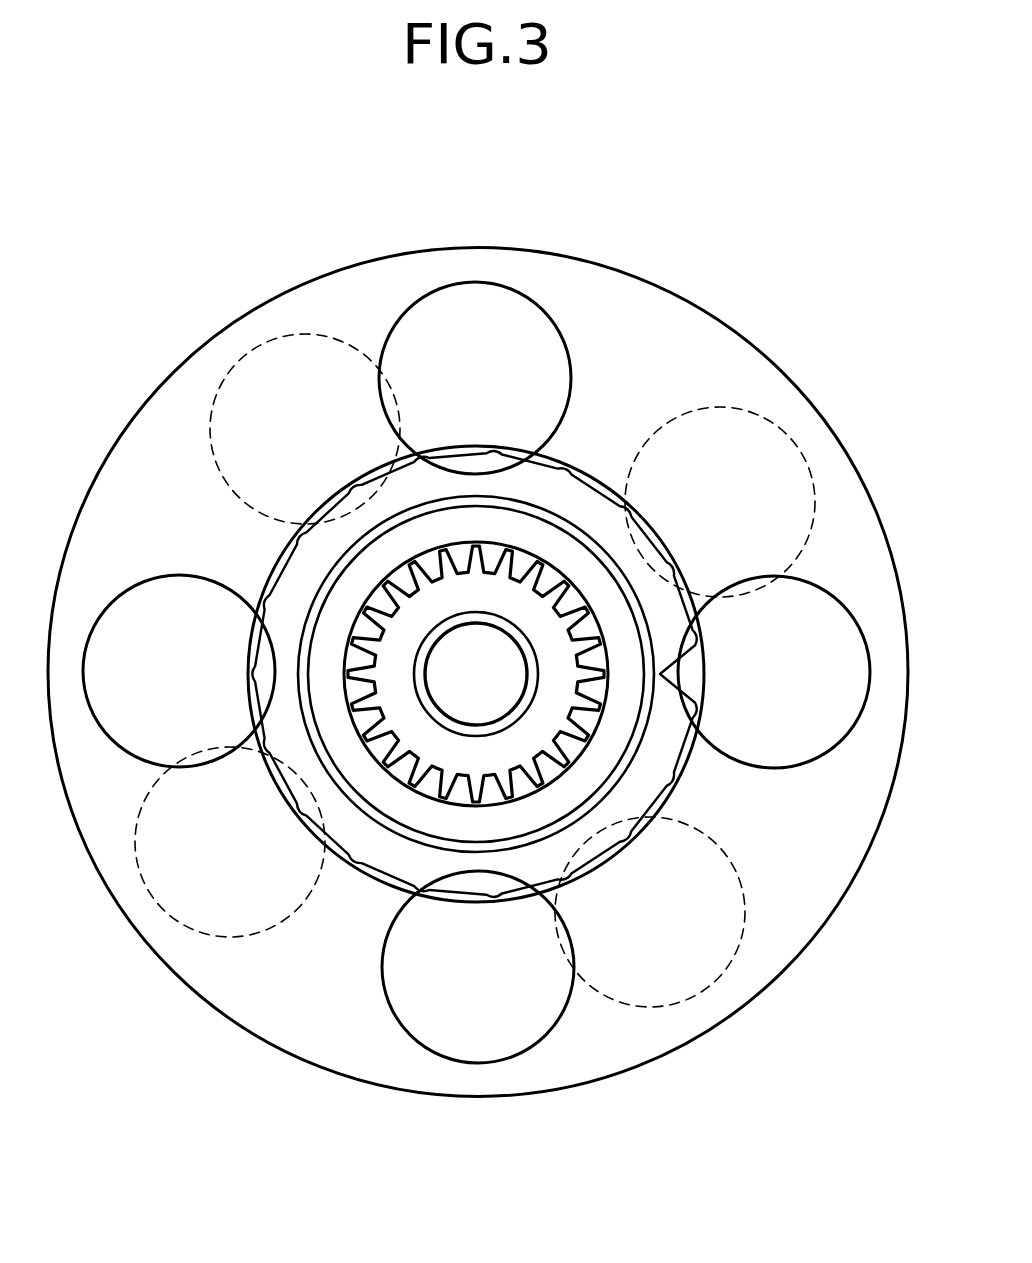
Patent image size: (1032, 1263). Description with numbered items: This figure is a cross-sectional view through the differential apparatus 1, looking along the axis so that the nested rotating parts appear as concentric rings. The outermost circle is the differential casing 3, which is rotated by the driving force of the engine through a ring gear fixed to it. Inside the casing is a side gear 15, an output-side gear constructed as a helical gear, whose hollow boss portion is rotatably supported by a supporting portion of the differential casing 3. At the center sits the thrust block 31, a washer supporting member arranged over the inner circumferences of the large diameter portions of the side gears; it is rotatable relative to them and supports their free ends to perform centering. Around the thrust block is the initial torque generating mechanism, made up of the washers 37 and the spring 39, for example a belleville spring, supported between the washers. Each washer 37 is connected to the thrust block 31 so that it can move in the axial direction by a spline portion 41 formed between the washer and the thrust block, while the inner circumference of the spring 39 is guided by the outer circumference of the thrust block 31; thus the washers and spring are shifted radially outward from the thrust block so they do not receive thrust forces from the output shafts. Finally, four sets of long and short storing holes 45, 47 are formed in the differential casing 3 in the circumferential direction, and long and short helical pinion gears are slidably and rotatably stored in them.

The differential apparatus 1 is at (737, 260).
The differential casing 3 is at (608, 267).
The side gear 15 is at (557, 482).
The thrust block 31 is at (433, 609).
The washer 37 is at (597, 548).
The spring 39 is at (631, 648).
The spline portion 41 is at (507, 582).
The long storing hole 45 is at (483, 284).
The short storing hole 47 is at (722, 972).